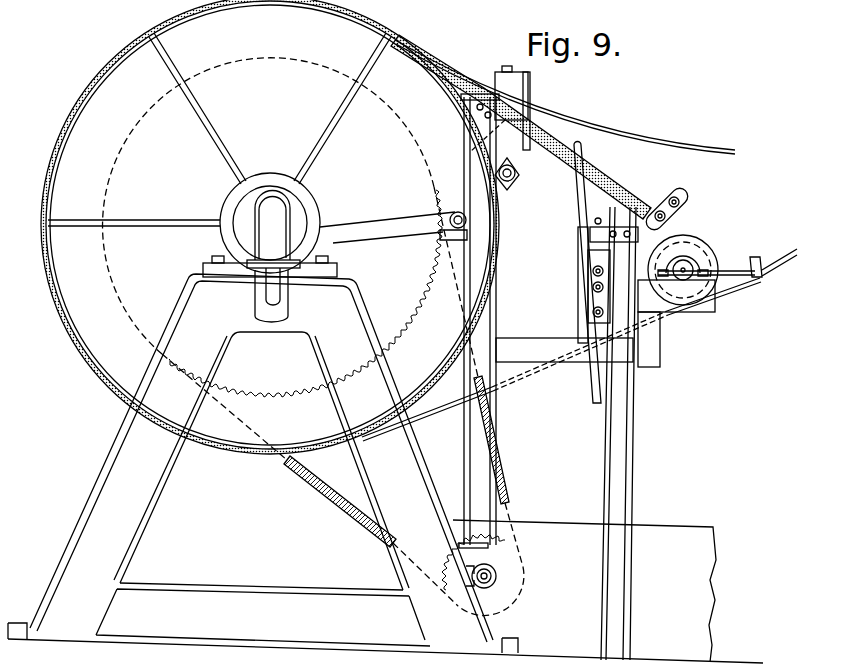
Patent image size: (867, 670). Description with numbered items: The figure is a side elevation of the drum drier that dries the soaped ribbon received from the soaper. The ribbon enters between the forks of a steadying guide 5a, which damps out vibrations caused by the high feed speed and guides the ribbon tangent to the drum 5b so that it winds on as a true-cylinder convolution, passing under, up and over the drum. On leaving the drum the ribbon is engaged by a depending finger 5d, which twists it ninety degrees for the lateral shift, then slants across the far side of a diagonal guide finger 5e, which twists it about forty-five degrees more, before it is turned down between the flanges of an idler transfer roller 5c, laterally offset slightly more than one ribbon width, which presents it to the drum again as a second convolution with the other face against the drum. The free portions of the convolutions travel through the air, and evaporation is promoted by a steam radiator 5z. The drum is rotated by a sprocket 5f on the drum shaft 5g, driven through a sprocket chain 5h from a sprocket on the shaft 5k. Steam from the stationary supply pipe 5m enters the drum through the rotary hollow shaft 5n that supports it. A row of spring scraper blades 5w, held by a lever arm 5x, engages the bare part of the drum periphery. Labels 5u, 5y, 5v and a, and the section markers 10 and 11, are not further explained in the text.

The drum 5b is at (100, 84).
The drum shaft 5g is at (270, 270).
The rotary hollow shaft 5n is at (292, 212).
The shaft 5u is at (268, 289).
The supply pipe 5m is at (258, 314).
The spring scraper blades 5w is at (481, 150).
The depending finger 5d is at (527, 143).
The diagonal guide finger 5e is at (576, 194).
The lever arm 5x is at (501, 189).
The chain link 5y is at (661, 203).
The idler transfer roller 5c is at (700, 237).
The steadying guide 5a is at (757, 258).
The steam radiator 5z is at (590, 293).
The sprocket 5f is at (405, 336).
The sprocket chain 5h is at (352, 512).
The small sprocket 5v is at (513, 527).
The shaft 5k is at (498, 576).
The belt a is at (647, 139).
The section line 10 is at (808, 15).
The section line 11 is at (288, 9).